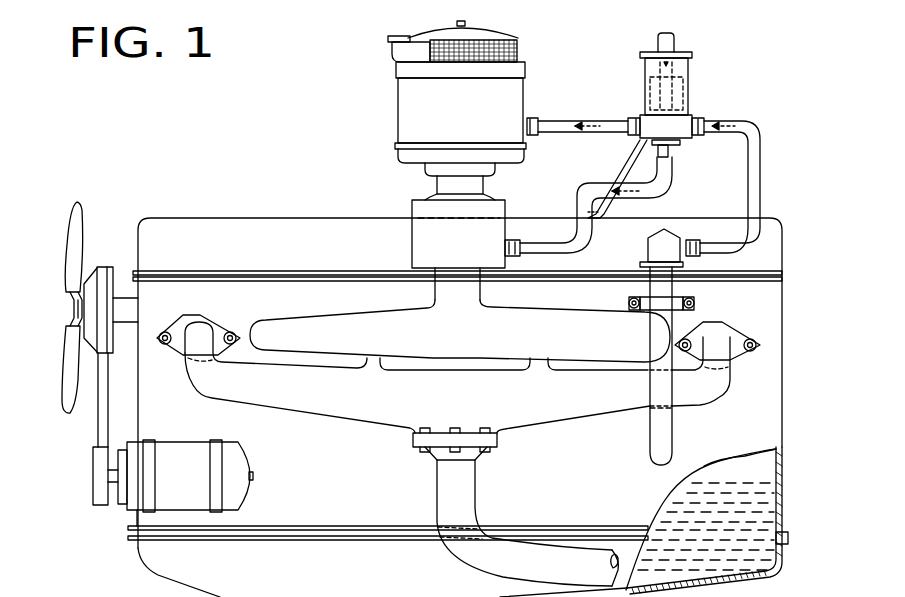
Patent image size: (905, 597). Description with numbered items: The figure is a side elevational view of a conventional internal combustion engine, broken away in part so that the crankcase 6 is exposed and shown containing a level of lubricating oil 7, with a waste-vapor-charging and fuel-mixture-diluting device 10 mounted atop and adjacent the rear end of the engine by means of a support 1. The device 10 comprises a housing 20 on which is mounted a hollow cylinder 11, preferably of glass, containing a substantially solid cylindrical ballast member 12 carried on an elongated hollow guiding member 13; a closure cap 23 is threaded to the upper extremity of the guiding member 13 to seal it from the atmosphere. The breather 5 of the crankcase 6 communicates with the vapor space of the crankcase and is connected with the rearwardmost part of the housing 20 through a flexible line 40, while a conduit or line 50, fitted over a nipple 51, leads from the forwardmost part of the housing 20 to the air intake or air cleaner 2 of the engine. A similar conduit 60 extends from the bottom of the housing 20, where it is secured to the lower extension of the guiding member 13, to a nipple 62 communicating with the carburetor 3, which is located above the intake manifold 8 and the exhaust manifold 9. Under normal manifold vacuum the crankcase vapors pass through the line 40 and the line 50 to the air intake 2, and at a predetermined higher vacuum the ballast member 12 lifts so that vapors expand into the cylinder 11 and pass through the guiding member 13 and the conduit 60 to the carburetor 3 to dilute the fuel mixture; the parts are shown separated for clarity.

The support 1 is at (632, 163).
The air intake 2 is at (415, 95).
The carburetor 3 is at (412, 216).
The breather 5 is at (648, 250).
The crankcase 6 is at (757, 463).
The lubricating oil 7 is at (672, 512).
The intake manifold 8 is at (332, 318).
The exhaust manifold 9 is at (372, 407).
The device 10 is at (709, 49).
The hollow cylinder 11 is at (645, 70).
The ballast member 12 is at (676, 92).
The guiding member 13 is at (665, 68).
The housing 20 is at (682, 131).
The closure cap 23 is at (658, 45).
The conduit or line 40 is at (753, 148).
The conduit or line 50 is at (558, 126).
The nipple 51 is at (670, 155).
The conduit 60 is at (592, 192).
The nipple 62 is at (513, 240).